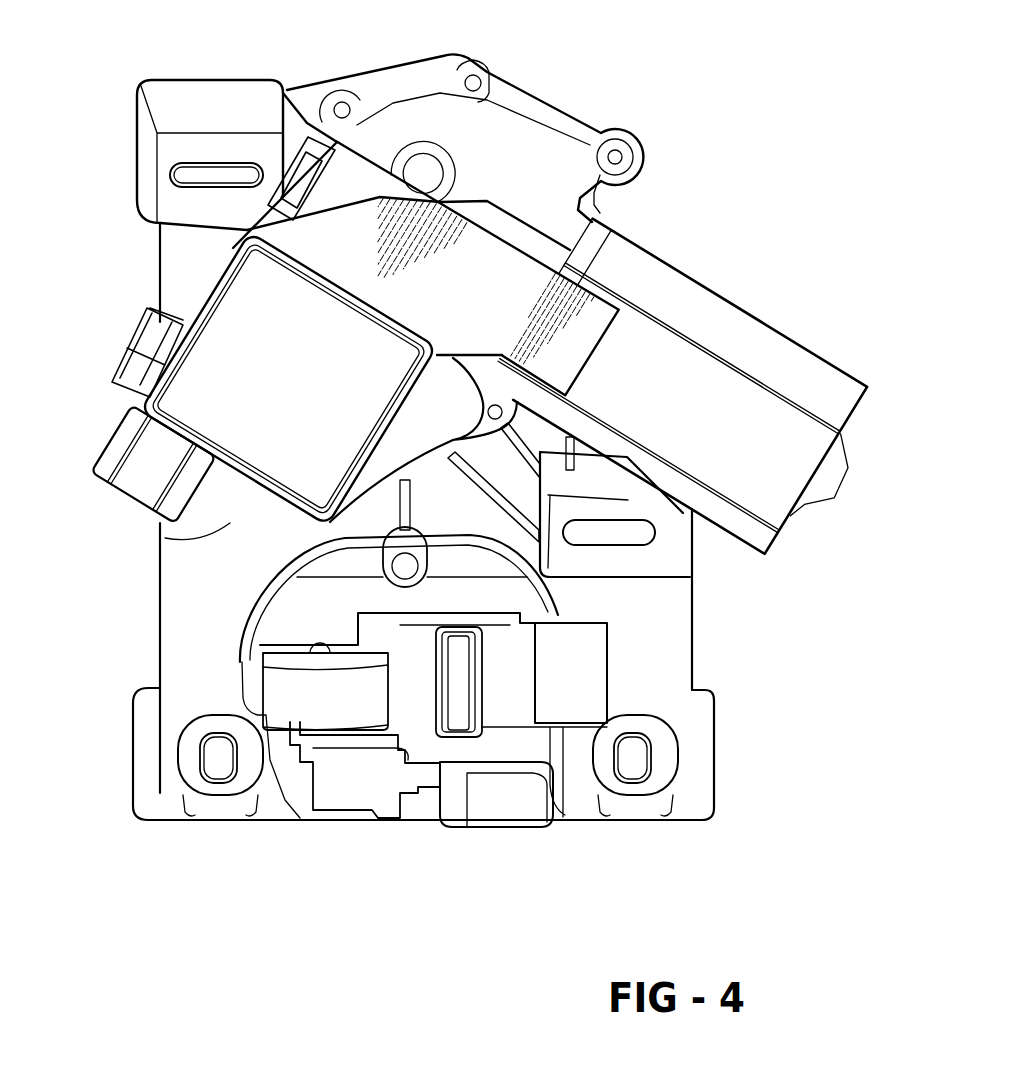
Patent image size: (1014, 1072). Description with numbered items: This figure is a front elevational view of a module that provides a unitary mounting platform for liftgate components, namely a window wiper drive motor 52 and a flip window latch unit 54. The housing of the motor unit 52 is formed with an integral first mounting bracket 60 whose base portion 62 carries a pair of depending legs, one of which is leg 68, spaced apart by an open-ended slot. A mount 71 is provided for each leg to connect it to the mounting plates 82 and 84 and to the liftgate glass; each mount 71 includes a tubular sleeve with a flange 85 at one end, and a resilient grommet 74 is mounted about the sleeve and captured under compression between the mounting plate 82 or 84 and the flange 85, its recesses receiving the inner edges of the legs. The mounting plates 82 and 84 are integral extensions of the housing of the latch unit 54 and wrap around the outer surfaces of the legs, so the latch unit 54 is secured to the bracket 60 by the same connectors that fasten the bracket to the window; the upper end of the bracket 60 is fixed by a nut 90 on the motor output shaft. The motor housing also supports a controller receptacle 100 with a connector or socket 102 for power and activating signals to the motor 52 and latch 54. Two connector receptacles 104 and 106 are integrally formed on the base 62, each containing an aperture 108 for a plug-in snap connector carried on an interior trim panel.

The wiper drive motor 52 is at (783, 331).
The flip window latch unit 54 is at (493, 720).
The first mounting bracket 60 is at (160, 628).
The base portion 62 is at (165, 538).
The leg 68 is at (183, 636).
The mount 71 is at (197, 771).
The grommet 74 is at (215, 792).
The mounting plate 82 is at (717, 790).
The mounting plate 84 is at (143, 757).
The flange 85 is at (218, 737).
The nut 90 is at (680, 663).
The controller receptacle 100 is at (292, 376).
The connector or socket 102 is at (118, 458).
The connector receptacle 104 is at (683, 545).
The connector receptacle 106 is at (215, 90).
The aperture 108 is at (170, 178).